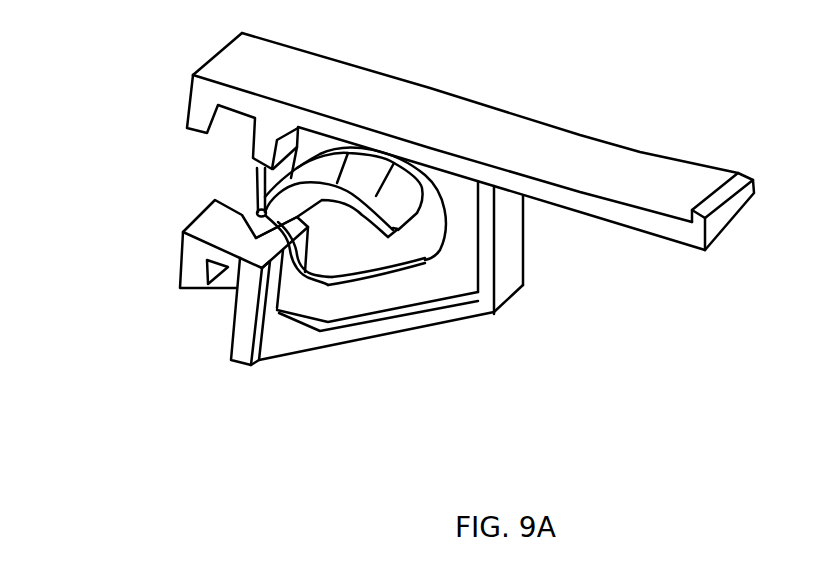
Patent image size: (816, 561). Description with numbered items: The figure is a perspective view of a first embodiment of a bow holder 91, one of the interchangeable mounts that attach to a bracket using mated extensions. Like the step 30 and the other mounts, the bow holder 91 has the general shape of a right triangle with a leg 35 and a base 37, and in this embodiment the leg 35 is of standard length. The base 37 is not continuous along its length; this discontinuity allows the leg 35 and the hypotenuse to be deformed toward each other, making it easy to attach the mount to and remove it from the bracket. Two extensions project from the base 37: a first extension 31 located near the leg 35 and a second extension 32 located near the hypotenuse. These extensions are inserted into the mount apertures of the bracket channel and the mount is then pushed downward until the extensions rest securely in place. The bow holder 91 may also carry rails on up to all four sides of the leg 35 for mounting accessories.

The step 30 is at (391, 337).
The first extension 31 is at (193, 130).
The second extension 32 is at (178, 290).
The leg 35 is at (392, 73).
The base 37 is at (152, 143).
The bow holder 91 is at (522, 118).